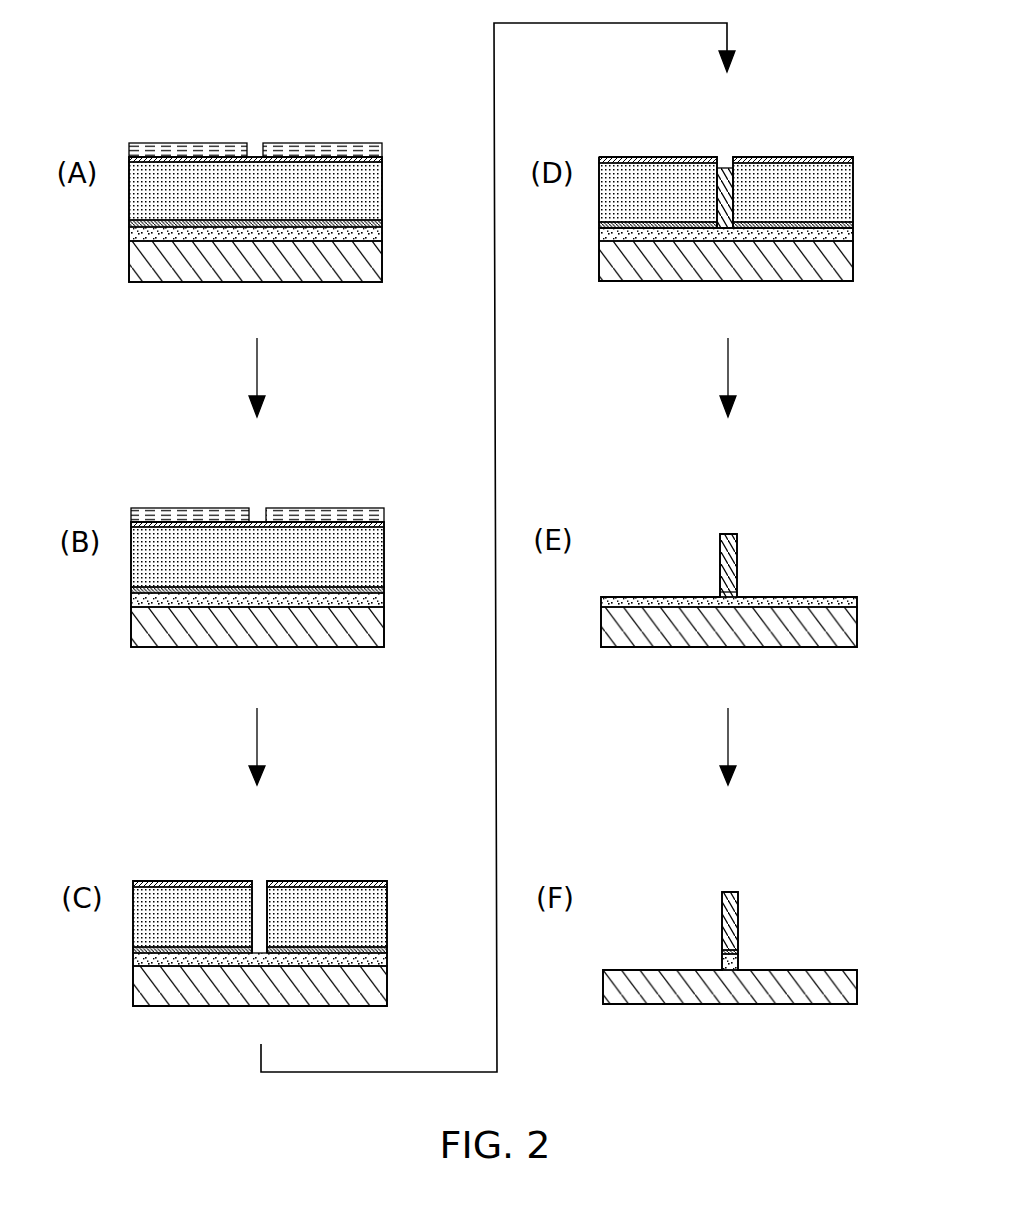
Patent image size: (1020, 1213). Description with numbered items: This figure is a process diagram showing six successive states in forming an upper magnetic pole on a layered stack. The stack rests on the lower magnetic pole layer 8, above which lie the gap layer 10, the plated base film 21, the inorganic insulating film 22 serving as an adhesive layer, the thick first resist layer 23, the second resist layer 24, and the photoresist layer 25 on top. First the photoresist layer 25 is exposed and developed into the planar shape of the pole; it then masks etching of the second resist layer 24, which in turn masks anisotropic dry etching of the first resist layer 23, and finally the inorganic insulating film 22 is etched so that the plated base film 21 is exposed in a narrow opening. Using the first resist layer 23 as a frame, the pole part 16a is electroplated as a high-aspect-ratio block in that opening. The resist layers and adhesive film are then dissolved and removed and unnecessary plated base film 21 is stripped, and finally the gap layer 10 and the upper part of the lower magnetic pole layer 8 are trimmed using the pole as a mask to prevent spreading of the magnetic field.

The lower magnetic pole layer 8 is at (383, 262).
The gap layer 10 is at (128, 236).
The pole part 16a is at (726, 157).
The plated base film 21 is at (383, 232).
The inorganic insulating film 22 is at (383, 222).
The first resist layer 23 is at (383, 190).
The second resist layer 24 is at (254, 156).
The photoresist layer 25 is at (178, 146).